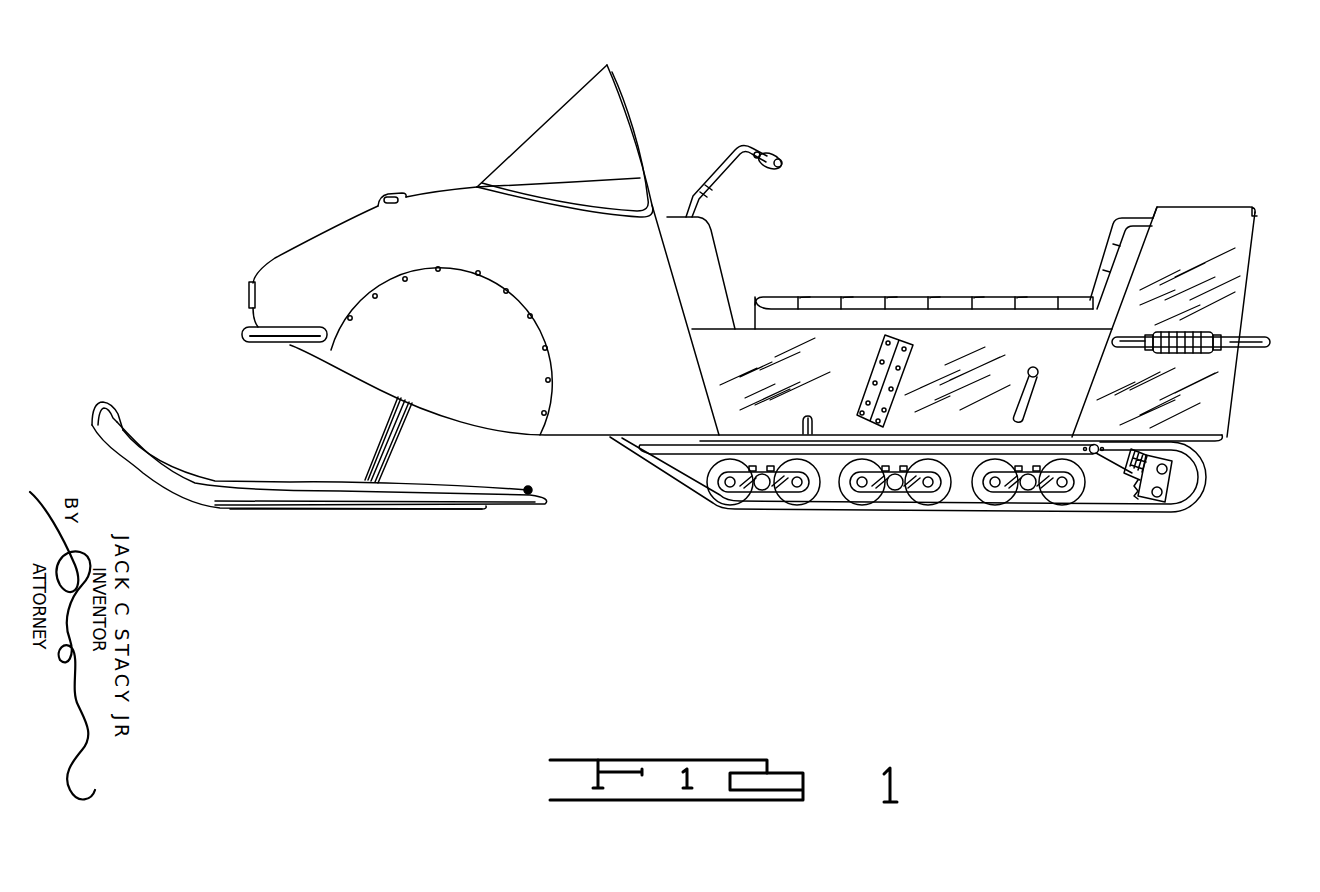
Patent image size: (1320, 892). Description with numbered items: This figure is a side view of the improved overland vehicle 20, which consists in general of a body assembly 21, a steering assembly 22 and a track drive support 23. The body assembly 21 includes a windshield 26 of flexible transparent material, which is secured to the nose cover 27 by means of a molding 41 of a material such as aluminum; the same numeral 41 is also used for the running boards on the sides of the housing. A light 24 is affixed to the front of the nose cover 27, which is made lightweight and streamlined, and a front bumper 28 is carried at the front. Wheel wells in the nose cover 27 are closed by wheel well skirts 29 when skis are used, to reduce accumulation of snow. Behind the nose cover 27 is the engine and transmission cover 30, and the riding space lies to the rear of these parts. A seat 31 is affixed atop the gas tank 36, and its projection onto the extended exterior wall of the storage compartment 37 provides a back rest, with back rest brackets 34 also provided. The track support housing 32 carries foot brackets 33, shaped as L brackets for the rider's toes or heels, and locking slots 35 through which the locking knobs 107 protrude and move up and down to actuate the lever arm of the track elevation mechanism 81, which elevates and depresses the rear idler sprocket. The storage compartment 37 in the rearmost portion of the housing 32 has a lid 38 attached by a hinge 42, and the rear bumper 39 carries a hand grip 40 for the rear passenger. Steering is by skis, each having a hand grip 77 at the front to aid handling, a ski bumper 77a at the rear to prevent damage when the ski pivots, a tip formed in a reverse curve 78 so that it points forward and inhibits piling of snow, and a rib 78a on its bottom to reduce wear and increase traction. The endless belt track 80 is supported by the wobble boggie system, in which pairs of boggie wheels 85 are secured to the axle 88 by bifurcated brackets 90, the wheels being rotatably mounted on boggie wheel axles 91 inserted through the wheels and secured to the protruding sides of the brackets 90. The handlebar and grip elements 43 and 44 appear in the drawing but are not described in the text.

The overland vehicle 20 is at (924, 135).
The body assembly 21 is at (343, 167).
The steering assembly 22 is at (188, 377).
The track drive support 23 is at (997, 547).
The light 24 is at (250, 290).
The windshield 26 is at (556, 108).
The nose cover 27 is at (312, 230).
The front bumper 28 is at (258, 325).
The wheel well skirt 29 is at (402, 377).
The engine and transmission cover 30 is at (697, 244).
The seat 31 is at (962, 296).
The track support housing 32 is at (748, 348).
The foot bracket 33 is at (812, 420).
The back rest bracket 34 is at (882, 392).
The locking slot 35 is at (1026, 400).
The gas tank 36 is at (783, 315).
The storage compartment 37 is at (1250, 253).
The storage compartment lid 38 is at (1205, 208).
The rear bumper 39 is at (1258, 338).
The hand grip 40 is at (1180, 352).
The molding 41 is at (636, 96).
The hinge 42 is at (1155, 213).
The handlebar 43 is at (720, 162).
The handlebar grip 44 is at (772, 156).
The hand grip 77 is at (118, 410).
The ski bumper 77a is at (536, 490).
The reverse curve 78 is at (106, 452).
The rib 78a is at (325, 509).
The track 80 is at (1123, 513).
The track elevation mechanism 81 is at (1222, 466).
The boggie wheel 85 is at (722, 496).
The axle 88 is at (762, 491).
The bifurcated bracket 90 is at (765, 492).
The boggie wheel axle 91 is at (730, 487).
The locking knob 107 is at (1038, 371).